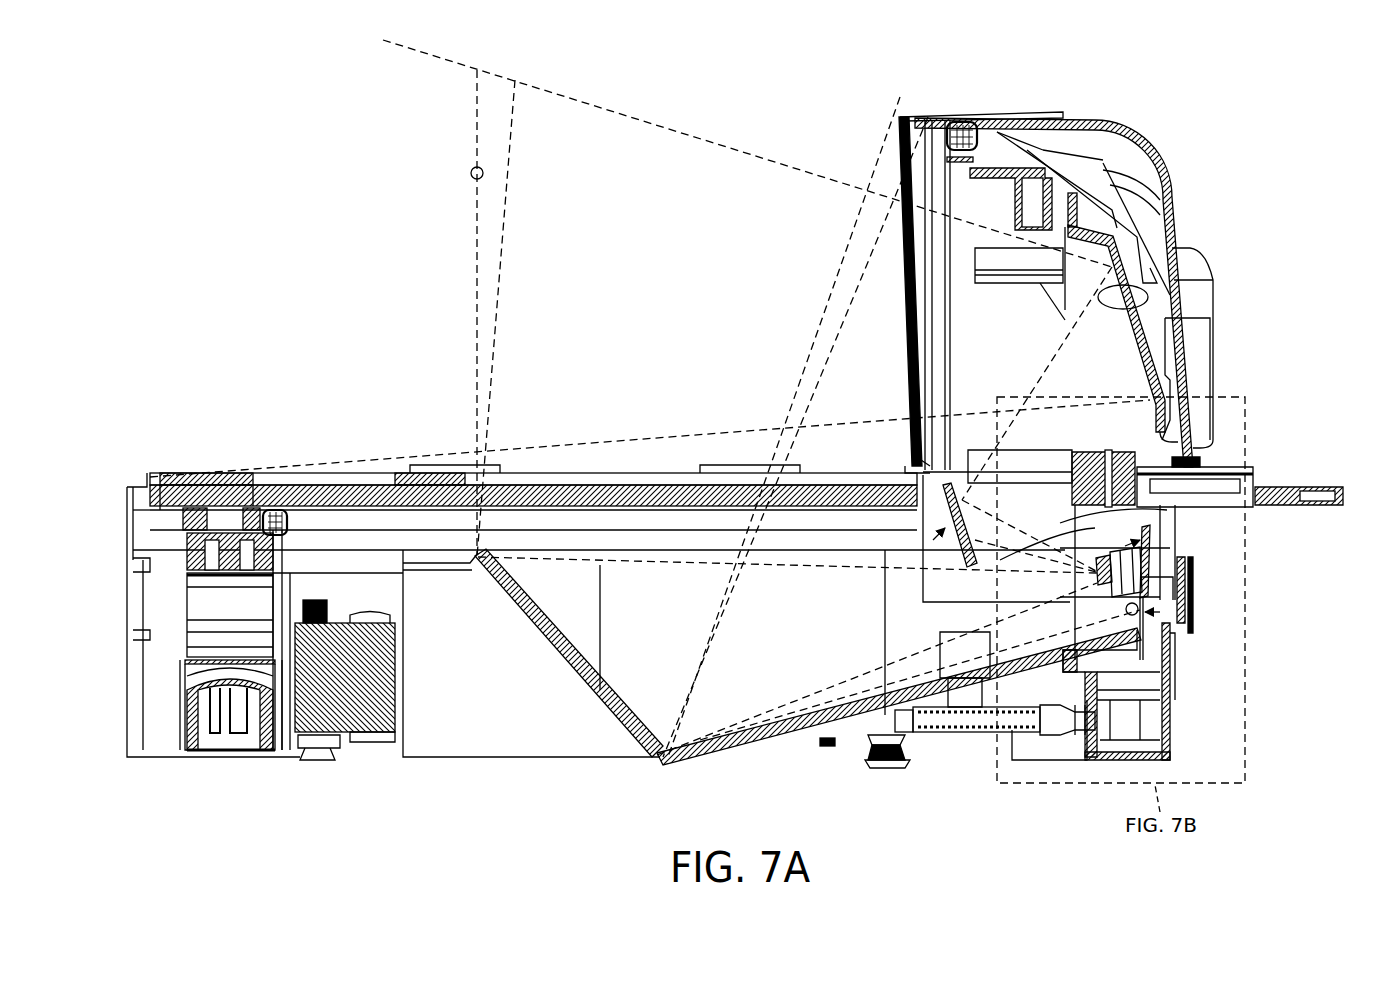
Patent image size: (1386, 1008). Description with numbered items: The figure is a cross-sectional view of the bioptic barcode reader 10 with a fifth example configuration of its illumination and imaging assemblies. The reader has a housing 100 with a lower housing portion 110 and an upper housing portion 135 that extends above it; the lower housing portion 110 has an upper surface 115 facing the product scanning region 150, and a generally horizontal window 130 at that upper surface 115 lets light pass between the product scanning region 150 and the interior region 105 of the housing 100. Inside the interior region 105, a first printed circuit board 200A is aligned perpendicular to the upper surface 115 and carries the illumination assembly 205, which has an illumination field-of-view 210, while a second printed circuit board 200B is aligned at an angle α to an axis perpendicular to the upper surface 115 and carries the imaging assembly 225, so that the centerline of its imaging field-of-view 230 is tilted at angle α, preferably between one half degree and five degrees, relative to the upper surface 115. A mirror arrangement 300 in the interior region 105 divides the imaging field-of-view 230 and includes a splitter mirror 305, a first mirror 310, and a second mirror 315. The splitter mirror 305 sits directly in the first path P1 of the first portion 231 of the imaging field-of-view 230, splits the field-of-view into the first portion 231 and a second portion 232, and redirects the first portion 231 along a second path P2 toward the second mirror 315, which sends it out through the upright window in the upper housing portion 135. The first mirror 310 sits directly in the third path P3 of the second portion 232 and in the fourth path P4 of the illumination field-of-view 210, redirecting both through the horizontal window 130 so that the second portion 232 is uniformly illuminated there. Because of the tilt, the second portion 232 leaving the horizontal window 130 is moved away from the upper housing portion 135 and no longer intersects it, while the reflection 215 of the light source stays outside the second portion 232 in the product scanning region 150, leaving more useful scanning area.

The bioptic barcode reader 10 is at (200, 120).
The housing 100 is at (1232, 770).
The interior region 105 is at (743, 672).
The lower housing portion 110 is at (497, 758).
The upper surface 115 is at (400, 470).
The horizontal window 130 is at (680, 468).
The upper housing portion 135 is at (1178, 190).
The product scanning region 150 is at (651, 299).
The first printed circuit board 200A is at (1190, 595).
The second printed circuit board 200B is at (1180, 672).
The illumination assembly 205 is at (1192, 640).
The illumination field-of-view 210 is at (477, 288).
The reflection 215 is at (470, 173).
The imaging assembly 225 is at (1185, 548).
The imaging field-of-view 230 is at (1190, 690).
The first portion 231 is at (690, 128).
The second portion 232 is at (510, 205).
The mirror arrangement 300 is at (905, 582).
The splitter mirror 305 is at (995, 430).
The first mirror 310 is at (540, 618).
The second mirror 315 is at (1100, 290).
The first path P1 is at (1205, 470).
The second path P2 is at (1113, 332).
The third path P3 is at (1085, 745).
The fourth path P4 is at (1035, 745).